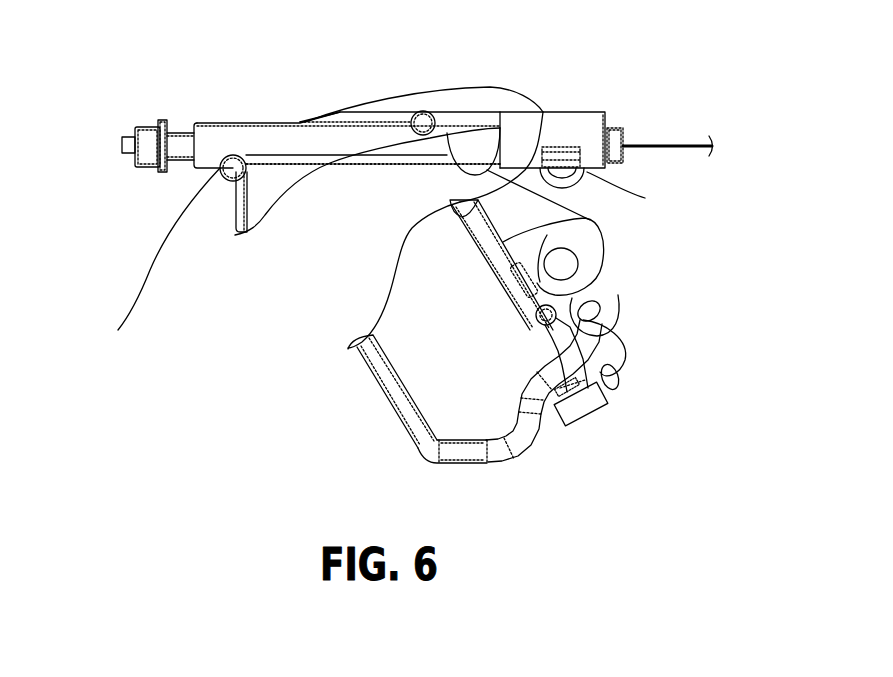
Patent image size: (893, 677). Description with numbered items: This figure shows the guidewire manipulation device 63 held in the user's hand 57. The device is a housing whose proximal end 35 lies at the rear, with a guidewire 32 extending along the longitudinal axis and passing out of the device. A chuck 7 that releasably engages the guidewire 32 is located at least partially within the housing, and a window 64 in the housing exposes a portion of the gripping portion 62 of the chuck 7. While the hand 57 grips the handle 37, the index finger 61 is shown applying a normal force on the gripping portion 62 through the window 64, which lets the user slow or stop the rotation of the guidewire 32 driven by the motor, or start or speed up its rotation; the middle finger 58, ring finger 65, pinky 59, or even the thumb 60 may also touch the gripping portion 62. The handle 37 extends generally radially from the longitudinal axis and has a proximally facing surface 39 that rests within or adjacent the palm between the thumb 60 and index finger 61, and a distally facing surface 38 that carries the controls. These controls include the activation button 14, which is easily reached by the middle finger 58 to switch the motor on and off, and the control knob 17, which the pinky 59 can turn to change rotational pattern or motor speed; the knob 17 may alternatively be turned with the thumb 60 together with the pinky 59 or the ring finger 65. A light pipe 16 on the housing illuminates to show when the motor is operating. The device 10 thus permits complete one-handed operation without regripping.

The medical device 10 is at (148, 122).
The proximal end 35 is at (198, 120).
The guidewire manipulation device 63 is at (256, 121).
The thumb 60 is at (398, 163).
The index finger 61 is at (505, 92).
The gripping portion 62 is at (567, 148).
The chuck 7 is at (605, 130).
The guidewire 32 is at (683, 143).
The window 64 is at (555, 170).
The user's hand 57 is at (255, 295).
The light pipe 16 is at (597, 223).
The middle finger 58 is at (607, 267).
The activation button 14 is at (593, 253).
The ring finger 65 is at (615, 303).
The distally facing surface 38 is at (610, 337).
The pinky 59 is at (603, 370).
The control knob 17 is at (600, 403).
The handle 37 is at (497, 420).
The proximally facing surface 39 is at (393, 415).